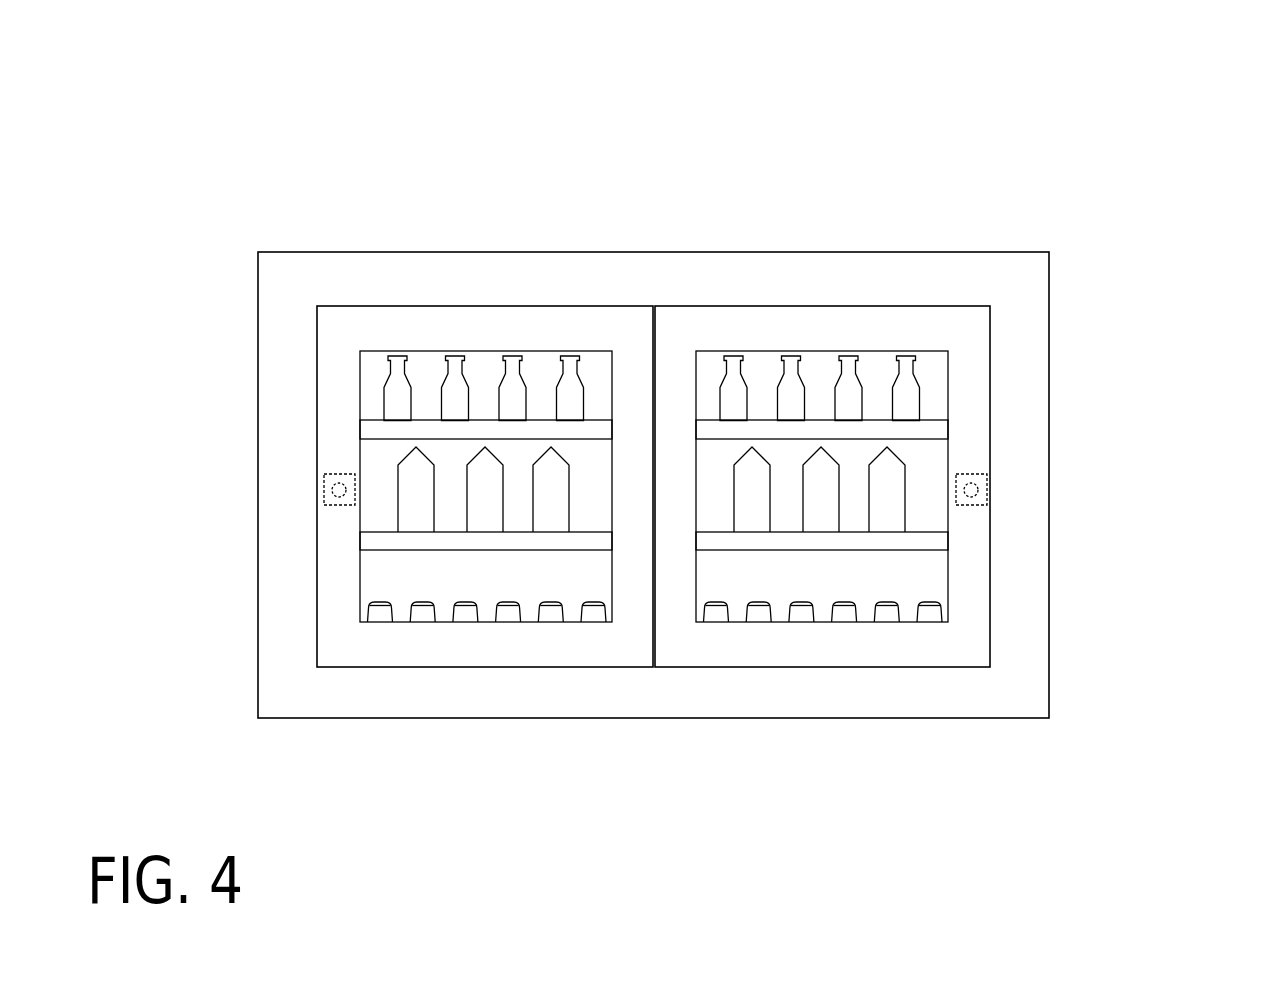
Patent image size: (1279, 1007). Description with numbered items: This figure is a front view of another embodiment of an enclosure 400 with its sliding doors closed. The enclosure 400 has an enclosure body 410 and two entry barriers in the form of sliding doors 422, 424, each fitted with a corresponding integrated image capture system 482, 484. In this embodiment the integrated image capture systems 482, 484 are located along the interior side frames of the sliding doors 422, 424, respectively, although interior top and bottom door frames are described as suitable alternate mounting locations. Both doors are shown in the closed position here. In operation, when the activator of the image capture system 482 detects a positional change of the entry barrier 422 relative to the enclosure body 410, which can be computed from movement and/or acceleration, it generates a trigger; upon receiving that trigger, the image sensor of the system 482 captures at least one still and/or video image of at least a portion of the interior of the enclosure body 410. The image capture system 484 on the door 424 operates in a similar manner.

The enclosure 400 is at (1105, 258).
The enclosure body 410 is at (258, 595).
The sliding door 422 is at (483, 306).
The sliding door 424 is at (830, 306).
The integrated image capture system 482 is at (323, 492).
The integrated image capture system 484 is at (990, 492).